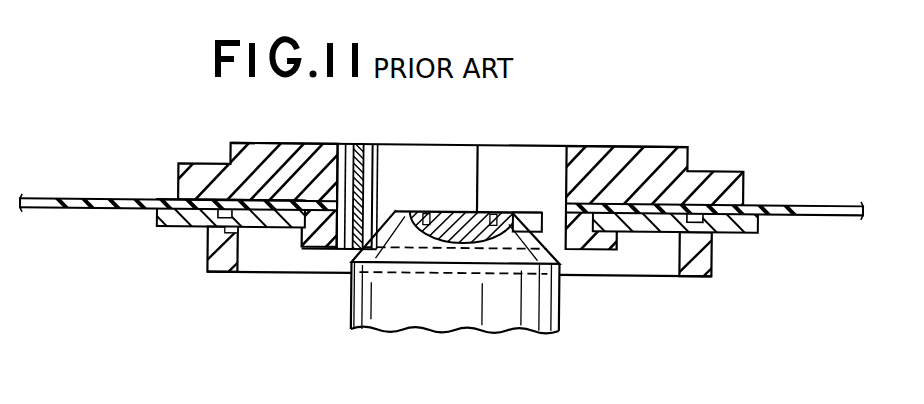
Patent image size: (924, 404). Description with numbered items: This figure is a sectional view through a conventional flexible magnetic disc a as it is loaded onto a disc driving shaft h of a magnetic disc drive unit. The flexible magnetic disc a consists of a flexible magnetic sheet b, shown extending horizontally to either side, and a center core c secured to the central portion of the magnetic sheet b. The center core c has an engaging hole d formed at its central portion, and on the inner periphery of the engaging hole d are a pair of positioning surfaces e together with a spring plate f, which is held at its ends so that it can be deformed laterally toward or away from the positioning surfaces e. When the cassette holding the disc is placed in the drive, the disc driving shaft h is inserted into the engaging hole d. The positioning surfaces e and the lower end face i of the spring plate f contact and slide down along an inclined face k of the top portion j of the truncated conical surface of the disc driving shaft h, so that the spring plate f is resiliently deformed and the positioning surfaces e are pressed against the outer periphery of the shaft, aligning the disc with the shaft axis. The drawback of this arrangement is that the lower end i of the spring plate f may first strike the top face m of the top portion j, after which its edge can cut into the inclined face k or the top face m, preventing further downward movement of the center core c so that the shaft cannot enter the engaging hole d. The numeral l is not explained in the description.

The flexible magnetic disc a is at (809, 124).
The flexible magnetic sheet b is at (822, 202).
The center core c is at (674, 146).
The engaging hole d is at (566, 172).
The positioning surfaces e is at (528, 204).
The spring plate f is at (371, 165).
The disc driving shaft h is at (563, 317).
The lower end face of the spring plate i is at (360, 254).
The top portion of the disc driving shaft j is at (443, 204).
The inclined face k is at (388, 204).
The right plate l is at (743, 229).
The top face m is at (471, 204).